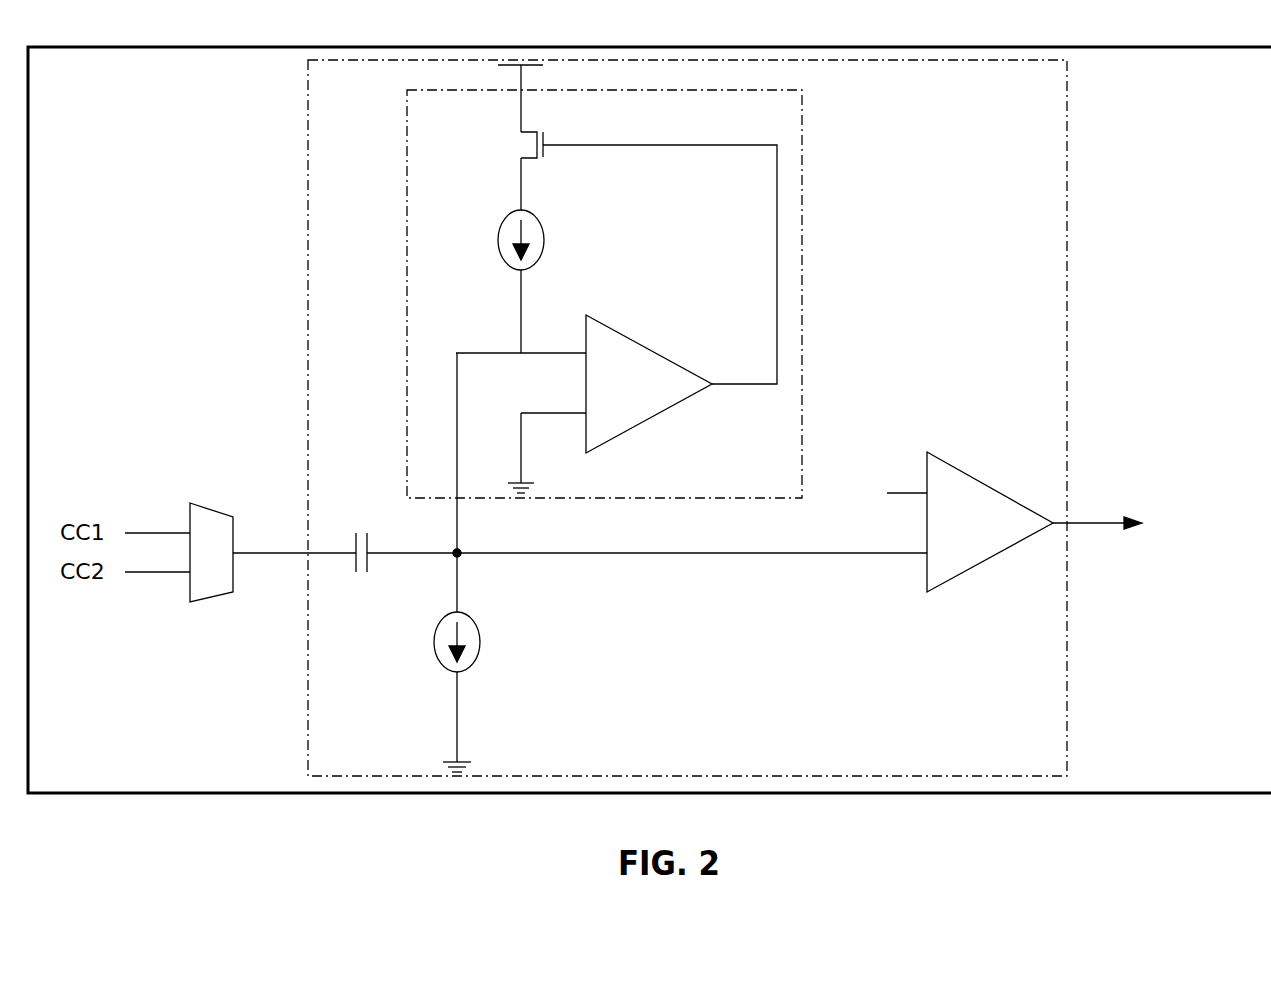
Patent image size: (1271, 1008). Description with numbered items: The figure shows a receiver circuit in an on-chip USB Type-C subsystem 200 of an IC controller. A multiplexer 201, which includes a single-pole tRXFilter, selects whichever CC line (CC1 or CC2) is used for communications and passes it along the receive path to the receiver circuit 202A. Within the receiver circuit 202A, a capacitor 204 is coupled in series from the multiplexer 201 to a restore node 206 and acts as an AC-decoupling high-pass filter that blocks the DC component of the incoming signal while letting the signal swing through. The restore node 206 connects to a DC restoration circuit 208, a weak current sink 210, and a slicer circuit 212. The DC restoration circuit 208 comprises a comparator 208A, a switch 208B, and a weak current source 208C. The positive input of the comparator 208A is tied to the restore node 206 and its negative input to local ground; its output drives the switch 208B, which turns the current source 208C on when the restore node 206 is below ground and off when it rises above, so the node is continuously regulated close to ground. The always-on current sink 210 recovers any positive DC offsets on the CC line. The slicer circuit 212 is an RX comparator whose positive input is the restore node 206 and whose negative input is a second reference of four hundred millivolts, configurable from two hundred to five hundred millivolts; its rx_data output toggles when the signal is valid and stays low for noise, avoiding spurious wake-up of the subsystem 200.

The USB subsystem 200 is at (76, 83).
The multiplexer 201 is at (207, 512).
The receiver circuit 202A is at (950, 96).
The capacitor 204 is at (357, 526).
The restore node 206 is at (461, 556).
The DC restoration circuit 208 is at (632, 121).
The comparator 208A is at (636, 415).
The switch 208B is at (512, 144).
The weak current source 208C is at (543, 238).
The weak current sink 210 is at (478, 640).
The slicer circuit 212 is at (975, 490).